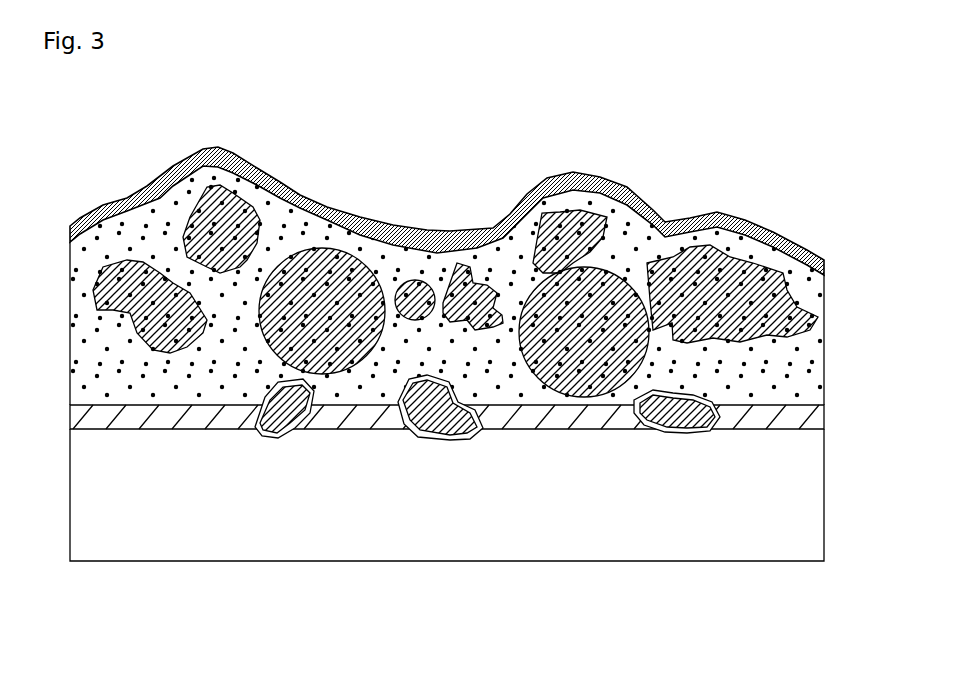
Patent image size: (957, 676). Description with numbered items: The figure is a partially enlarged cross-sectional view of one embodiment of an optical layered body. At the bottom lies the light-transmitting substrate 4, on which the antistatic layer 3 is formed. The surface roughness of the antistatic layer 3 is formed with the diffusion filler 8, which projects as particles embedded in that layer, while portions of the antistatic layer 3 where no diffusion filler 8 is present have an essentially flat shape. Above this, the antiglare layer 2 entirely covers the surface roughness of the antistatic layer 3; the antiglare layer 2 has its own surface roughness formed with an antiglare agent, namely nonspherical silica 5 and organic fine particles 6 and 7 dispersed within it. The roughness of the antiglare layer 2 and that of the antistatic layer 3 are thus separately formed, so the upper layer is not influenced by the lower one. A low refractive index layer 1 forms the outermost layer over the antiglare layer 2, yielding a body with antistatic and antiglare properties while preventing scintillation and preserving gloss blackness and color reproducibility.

The low refractive index layer 1 is at (783, 235).
The antiglare layer 2 is at (808, 297).
The antistatic layer 3 is at (802, 418).
The light-transmitting substrate 4 is at (796, 500).
The nonspherical silica 5 is at (133, 273).
The organic fine particles 6 is at (327, 290).
The organic fine particles 7 is at (418, 293).
The diffusion filler 8 is at (660, 430).